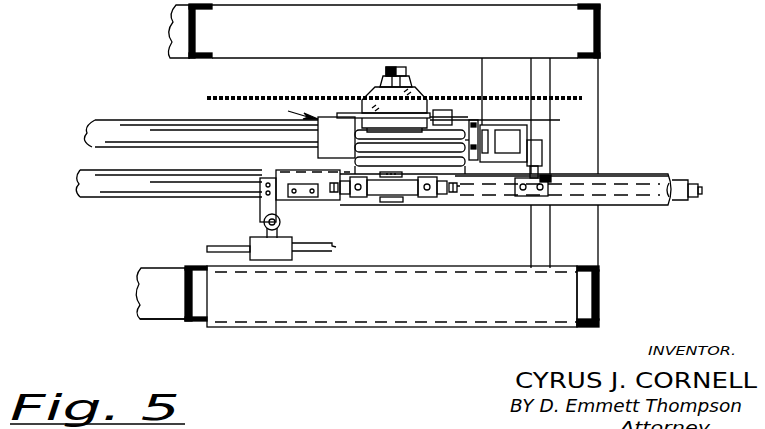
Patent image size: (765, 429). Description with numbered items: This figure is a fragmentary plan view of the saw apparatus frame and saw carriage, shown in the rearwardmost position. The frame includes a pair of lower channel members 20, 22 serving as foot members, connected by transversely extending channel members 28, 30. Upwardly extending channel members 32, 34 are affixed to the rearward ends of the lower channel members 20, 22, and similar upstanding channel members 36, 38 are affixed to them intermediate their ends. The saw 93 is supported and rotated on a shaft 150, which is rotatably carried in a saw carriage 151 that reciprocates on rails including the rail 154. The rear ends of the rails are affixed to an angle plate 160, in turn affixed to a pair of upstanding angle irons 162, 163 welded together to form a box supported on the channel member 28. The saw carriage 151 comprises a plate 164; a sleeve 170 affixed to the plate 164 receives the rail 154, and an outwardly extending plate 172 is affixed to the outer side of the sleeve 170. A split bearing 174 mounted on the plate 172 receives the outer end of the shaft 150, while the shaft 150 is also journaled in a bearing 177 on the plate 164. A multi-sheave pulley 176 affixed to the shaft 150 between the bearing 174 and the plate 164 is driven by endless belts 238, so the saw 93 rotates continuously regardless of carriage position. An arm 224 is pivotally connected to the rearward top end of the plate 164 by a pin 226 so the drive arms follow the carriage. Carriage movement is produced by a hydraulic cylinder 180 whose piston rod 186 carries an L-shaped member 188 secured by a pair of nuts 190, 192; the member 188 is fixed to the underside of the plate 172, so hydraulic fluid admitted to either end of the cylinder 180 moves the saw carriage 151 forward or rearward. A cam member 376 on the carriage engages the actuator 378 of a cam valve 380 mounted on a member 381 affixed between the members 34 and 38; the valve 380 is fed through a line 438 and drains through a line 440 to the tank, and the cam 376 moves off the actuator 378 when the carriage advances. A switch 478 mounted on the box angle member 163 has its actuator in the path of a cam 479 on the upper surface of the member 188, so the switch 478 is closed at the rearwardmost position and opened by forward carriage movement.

The lower channel member 20 is at (395, 31).
The upstanding channel member 36 is at (196, 32).
The upwardly extending channel member 32 is at (594, 33).
The transversely extending channel member 28 is at (506, 163).
The transversely extending channel member 30 is at (571, 163).
The switch 478 is at (598, 136).
The saw 93 is at (288, 97).
The shaft 150 is at (394, 67).
The plate 164 is at (345, 113).
The pin 226 is at (445, 110).
The arm 224 is at (556, 120).
The bearing 177 is at (426, 133).
The multi-sheave pulley 176 is at (358, 132).
The endless belts 238 is at (356, 145).
The saw carriage 151 is at (287, 109).
The angle plate 160 is at (474, 123).
The upstanding angle iron 162 is at (488, 153).
The box angle member 163 is at (541, 141).
The rail 154 is at (122, 122).
The hydraulic cylinder 180 is at (136, 197).
The cam member 376 is at (286, 185).
The sleeve 170 is at (326, 165).
The actuator 378 is at (280, 222).
The cam valve 380 is at (290, 243).
The line 438 is at (216, 246).
The line 440 is at (336, 249).
The piston rod 186 is at (628, 200).
The L-shaped member 188 is at (620, 173).
The nut 190 is at (676, 178).
The nut 192 is at (690, 185).
The split bearing 174 is at (375, 197).
The outwardly extending plate 172 is at (462, 200).
The cam 479 is at (524, 200).
The upstanding channel member 38 is at (178, 292).
The lower channel member 22 is at (158, 320).
The member 381 is at (333, 327).
The upwardly extending channel member 34 is at (599, 299).